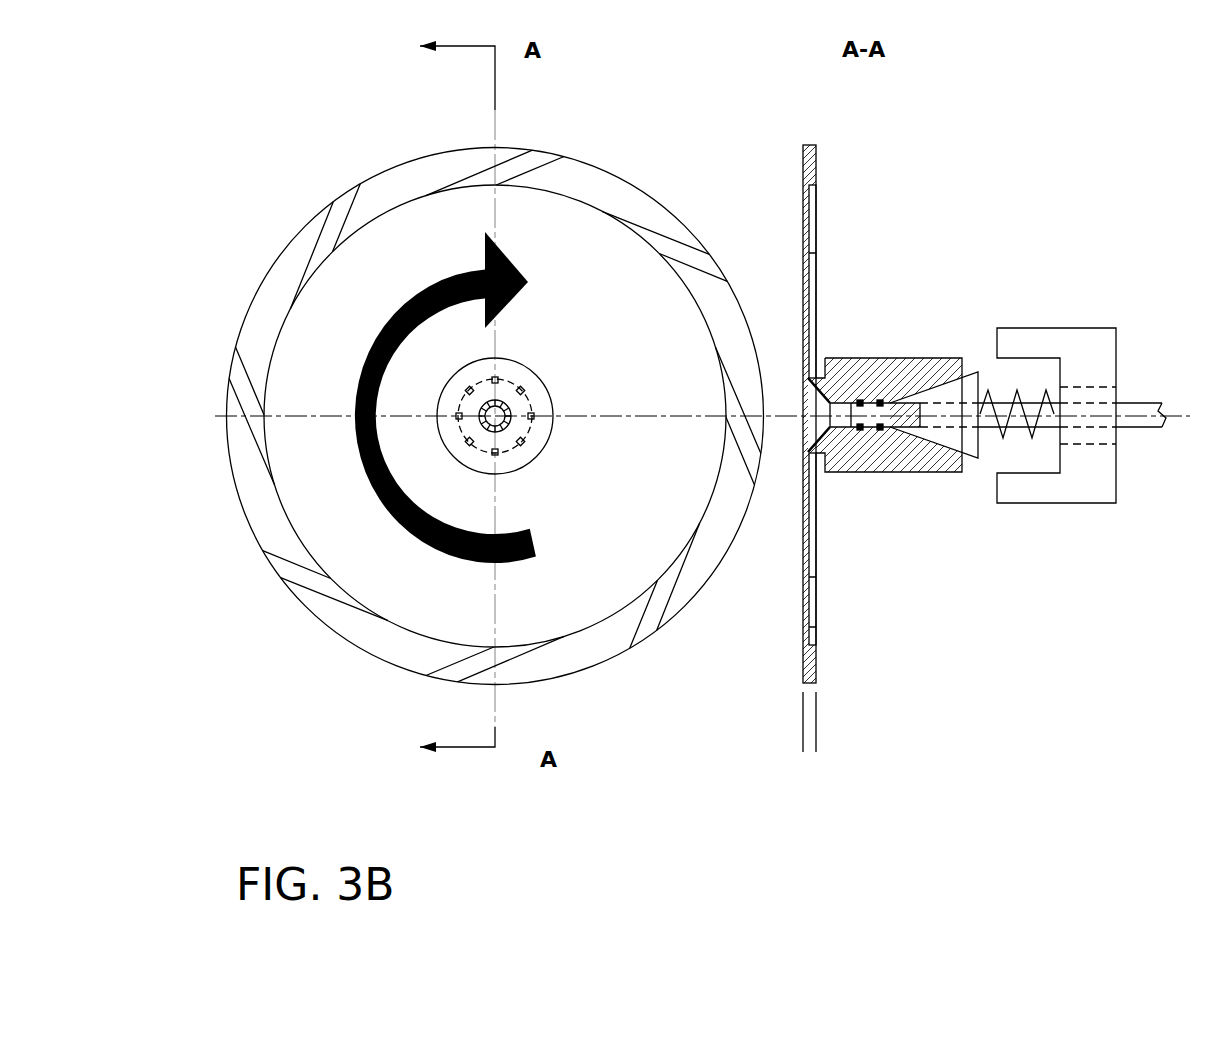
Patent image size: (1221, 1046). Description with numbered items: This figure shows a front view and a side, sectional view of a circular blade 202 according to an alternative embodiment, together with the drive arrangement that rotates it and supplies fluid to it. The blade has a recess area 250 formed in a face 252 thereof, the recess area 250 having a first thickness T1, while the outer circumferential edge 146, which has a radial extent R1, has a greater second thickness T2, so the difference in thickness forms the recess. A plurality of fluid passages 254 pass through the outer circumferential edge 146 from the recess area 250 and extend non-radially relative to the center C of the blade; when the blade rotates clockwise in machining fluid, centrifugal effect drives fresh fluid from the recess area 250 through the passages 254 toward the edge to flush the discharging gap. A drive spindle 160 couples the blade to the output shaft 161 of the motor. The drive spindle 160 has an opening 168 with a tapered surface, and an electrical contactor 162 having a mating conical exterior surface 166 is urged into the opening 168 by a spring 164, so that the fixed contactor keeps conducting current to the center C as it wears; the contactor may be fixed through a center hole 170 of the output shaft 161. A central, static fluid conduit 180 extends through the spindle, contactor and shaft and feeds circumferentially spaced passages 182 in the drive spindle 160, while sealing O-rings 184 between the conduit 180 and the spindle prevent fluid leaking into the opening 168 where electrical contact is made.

The outer circumferential edge 146 is at (615, 172).
The drive spindle 160 is at (540, 402).
The output shaft 161 is at (1082, 355).
The electrical contactor 162 is at (985, 393).
The spring 164 is at (998, 432).
The exterior surface 166 is at (966, 458).
The opening 168 is at (906, 440).
The center hole 170 is at (1085, 438).
The fluid conduit 180 is at (1135, 421).
The passages 182 is at (513, 393).
The sealing O-rings 184 is at (879, 402).
The circular blade 202 is at (297, 166).
The recess area 250 is at (628, 336).
The face 252 is at (598, 283).
The fluid passages 254 is at (517, 162).
The center C is at (514, 428).
The radial extent R1 is at (413, 243).
The first thickness T1 is at (770, 607).
The second thickness T2 is at (777, 722).